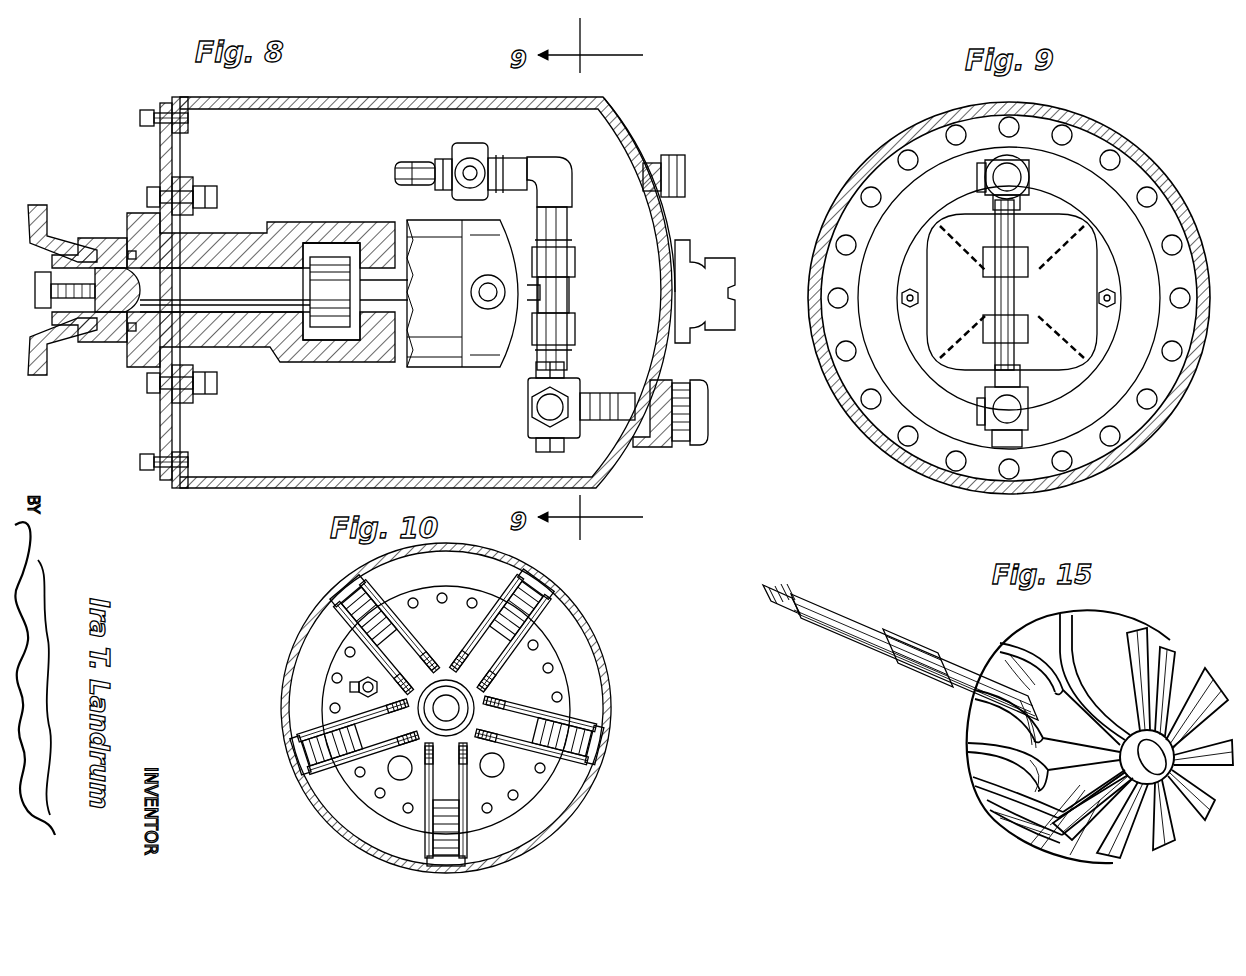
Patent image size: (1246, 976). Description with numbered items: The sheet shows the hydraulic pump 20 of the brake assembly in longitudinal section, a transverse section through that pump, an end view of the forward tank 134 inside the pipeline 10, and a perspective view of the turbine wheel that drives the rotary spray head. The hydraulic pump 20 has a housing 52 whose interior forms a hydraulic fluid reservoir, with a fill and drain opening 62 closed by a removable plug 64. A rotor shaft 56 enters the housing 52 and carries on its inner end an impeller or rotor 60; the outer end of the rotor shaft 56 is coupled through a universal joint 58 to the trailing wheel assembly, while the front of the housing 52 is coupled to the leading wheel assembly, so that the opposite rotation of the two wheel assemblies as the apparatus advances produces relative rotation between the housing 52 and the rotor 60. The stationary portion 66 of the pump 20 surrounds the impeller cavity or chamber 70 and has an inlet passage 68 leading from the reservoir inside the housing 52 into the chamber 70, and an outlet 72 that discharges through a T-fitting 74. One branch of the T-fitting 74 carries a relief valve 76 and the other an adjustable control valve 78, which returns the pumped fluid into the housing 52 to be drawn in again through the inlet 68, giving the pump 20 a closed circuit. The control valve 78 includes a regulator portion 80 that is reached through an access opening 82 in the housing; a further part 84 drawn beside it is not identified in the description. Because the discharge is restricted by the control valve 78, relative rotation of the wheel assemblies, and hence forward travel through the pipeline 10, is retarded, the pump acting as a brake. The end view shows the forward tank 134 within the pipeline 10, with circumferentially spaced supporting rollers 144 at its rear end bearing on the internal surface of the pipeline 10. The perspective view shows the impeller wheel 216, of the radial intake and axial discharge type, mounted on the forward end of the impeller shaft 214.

In FIG. 9, the pipeline 10 is at (1180, 208).
In FIG. 10, the pipeline 10 is at (592, 620).
In FIG. 8, the hydraulic pump 20 is at (372, 96).
In FIG. 8, the housing 52 is at (634, 128).
In FIG. 8, the rotor shaft 56 is at (232, 286).
In FIG. 8, the universal joint 58 is at (48, 228).
In FIG. 8, the impeller or rotor 60 is at (326, 258).
In FIG. 8, the fill and drain opening 62 is at (646, 186).
In FIG. 8, the removable plug 64 is at (686, 180).
In FIG. 8, the stationary portion 66 is at (300, 361).
In FIG. 9, the stationary portion 66 is at (948, 325).
In FIG. 8, the inlet passage 68 is at (328, 364).
In FIG. 8, the impeller cavity or chamber 70 is at (355, 243).
In FIG. 8, the outlet 72 is at (393, 292).
In FIG. 8, the T-fitting 74 is at (566, 298).
In FIG. 9, the T-fitting 74 is at (1014, 297).
In FIG. 8, the relief valve 76 is at (480, 156).
In FIG. 9, the relief valve 76 is at (1024, 179).
In FIG. 8, the adjustable control valve 78 is at (562, 396).
In FIG. 9, the adjustable control valve 78 is at (1016, 413).
In FIG. 8, the regulator portion 80 is at (596, 416).
In FIG. 8, the access opening 82 is at (648, 449).
In FIG. 8, the bolt 84 is at (696, 444).
In FIG. 10, the forward tank 134 is at (563, 673).
In FIG. 10, the supporting rollers 144 is at (518, 590).
In FIG. 15, the impeller shaft 214 is at (948, 667).
In FIG. 15, the impeller wheel 216 is at (990, 796).